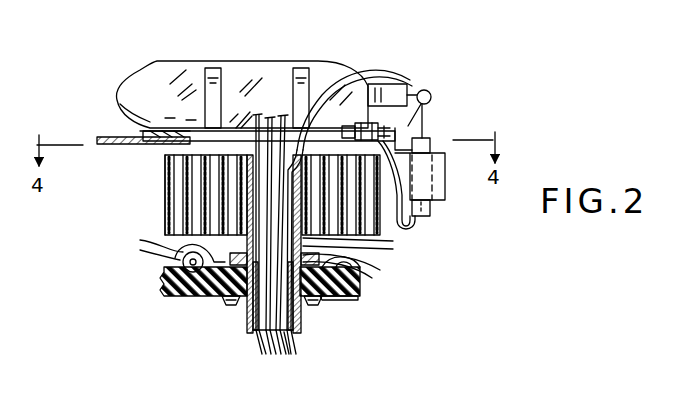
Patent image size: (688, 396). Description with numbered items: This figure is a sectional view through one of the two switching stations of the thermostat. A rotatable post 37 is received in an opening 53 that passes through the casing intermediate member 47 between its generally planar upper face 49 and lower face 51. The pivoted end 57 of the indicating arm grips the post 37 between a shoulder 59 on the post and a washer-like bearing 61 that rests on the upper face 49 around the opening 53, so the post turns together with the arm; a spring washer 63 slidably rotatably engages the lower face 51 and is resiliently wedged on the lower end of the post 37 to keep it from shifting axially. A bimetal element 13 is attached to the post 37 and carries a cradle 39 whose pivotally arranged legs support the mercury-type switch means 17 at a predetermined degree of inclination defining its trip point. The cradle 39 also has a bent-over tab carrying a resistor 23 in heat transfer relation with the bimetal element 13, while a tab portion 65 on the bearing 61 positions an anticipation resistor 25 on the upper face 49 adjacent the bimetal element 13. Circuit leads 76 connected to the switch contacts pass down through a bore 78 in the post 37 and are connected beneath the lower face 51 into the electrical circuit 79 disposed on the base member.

The bimetal element 13 is at (162, 194).
The switch means 17 is at (178, 60).
The resistor 23 is at (431, 140).
The resistor 25 is at (183, 262).
The post 37 is at (296, 318).
The cradle 39 is at (112, 148).
The intermediate member 47 is at (160, 285).
The upper face 49 is at (357, 268).
The lower face 51 is at (341, 297).
The opening 53 is at (252, 310).
The pivoted end 57 is at (335, 253).
The shoulder 59 is at (320, 243).
The bearing 61 is at (355, 262).
The spring washer 63 is at (237, 305).
The tab portion 65 is at (180, 250).
The circuit lead 76 is at (261, 353).
The bore 78 is at (291, 335).
The electrical circuit 79 is at (438, 187).